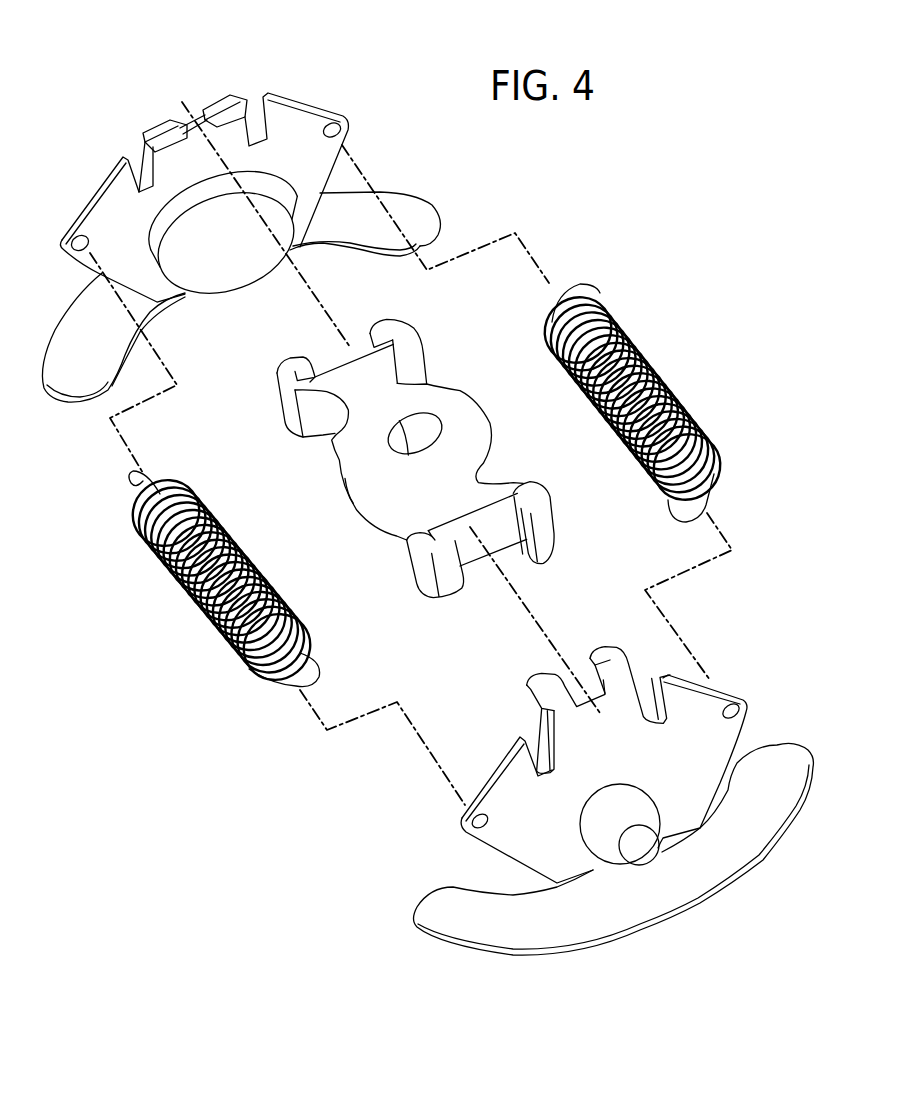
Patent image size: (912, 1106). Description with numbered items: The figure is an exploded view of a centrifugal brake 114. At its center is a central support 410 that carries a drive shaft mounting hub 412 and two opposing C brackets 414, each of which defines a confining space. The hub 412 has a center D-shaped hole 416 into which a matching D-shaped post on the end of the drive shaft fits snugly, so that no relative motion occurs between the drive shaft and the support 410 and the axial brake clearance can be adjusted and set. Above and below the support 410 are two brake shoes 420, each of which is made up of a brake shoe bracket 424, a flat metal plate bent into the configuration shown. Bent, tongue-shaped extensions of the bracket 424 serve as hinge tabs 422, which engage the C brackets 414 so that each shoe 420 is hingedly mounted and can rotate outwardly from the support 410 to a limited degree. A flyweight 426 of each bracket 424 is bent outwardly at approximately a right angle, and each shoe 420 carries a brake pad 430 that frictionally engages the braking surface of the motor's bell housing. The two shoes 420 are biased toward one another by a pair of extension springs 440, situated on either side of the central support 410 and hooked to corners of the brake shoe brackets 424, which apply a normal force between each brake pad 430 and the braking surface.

The brake 114 is at (672, 206).
The central support 410 is at (456, 355).
The drive shaft mounting hub 412 is at (411, 461).
The C brackets 414 is at (412, 458).
The D-shaped hole 416 is at (365, 445).
The brake shoe 420 is at (275, 65).
The hinge tabs 422 is at (240, 97).
The brake shoe bracket 424 is at (140, 231).
The flyweight 426 is at (418, 198).
The brake pad 430 is at (232, 292).
The extension springs 440 is at (665, 368).